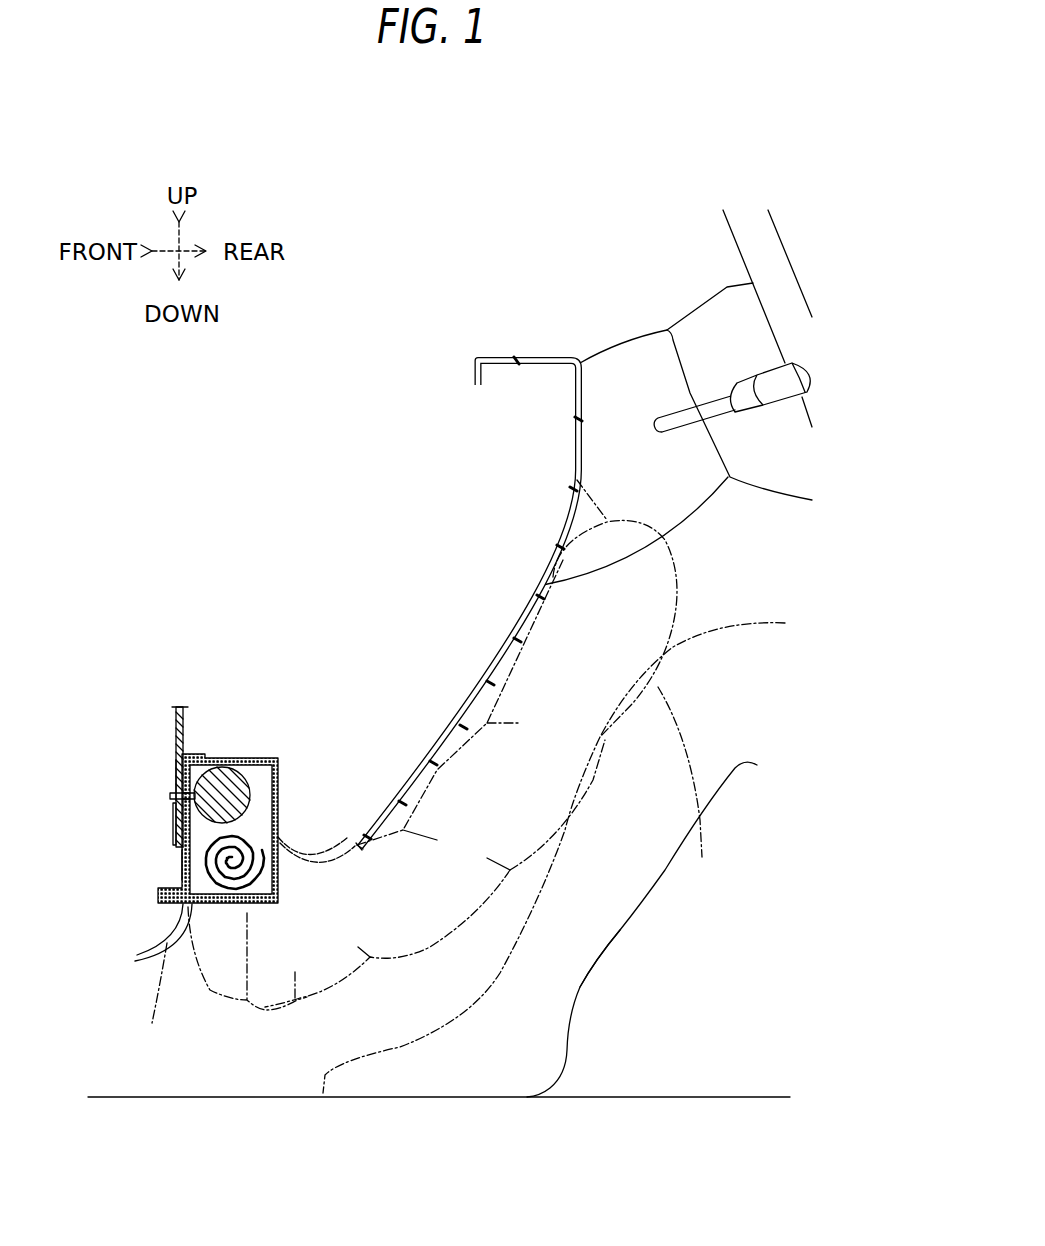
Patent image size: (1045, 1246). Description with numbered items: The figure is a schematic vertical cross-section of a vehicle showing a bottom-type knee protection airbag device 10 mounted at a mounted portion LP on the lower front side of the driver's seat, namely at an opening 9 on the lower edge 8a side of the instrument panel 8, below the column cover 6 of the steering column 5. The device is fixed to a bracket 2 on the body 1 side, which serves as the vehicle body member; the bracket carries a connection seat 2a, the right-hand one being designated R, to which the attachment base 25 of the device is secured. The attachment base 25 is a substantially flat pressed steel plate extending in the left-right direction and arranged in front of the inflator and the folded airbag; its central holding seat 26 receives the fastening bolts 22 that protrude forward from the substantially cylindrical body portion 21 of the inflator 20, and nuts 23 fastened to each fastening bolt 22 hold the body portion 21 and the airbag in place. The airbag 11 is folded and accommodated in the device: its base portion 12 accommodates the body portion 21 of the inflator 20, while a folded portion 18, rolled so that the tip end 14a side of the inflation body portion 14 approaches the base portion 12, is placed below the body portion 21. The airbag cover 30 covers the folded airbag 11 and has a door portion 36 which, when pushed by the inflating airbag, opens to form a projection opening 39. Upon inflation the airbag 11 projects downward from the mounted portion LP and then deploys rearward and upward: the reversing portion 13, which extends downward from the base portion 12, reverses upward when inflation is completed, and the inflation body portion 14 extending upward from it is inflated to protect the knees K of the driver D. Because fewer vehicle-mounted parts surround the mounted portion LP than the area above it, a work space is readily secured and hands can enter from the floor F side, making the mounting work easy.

The body 1 is at (176, 760).
The bracket 2 is at (150, 726).
The connection seat 2a is at (127, 739).
The steering column 5 is at (627, 323).
The column cover 6 is at (610, 367).
The instrument panel 8 is at (537, 603).
The lower edge 8a is at (360, 822).
The opening 9 is at (317, 838).
The knee protection airbag device 10 is at (258, 743).
The airbag 11 is at (690, 574).
The base portion 12 is at (255, 782).
The reversing portion 13 is at (370, 987).
The inflation body portion 14 is at (547, 808).
The tip end 14a is at (577, 480).
The folded portion 18 is at (252, 907).
The inflator 20 is at (210, 739).
The body portion 21 is at (222, 795).
The fastening bolt 22 is at (172, 796).
The nut 23 is at (177, 807).
The attachment base 25 is at (182, 863).
The holding seat 26 is at (173, 830).
The airbag cover 30 is at (255, 758).
The door portion 36 is at (208, 905).
The projection opening 39 is at (227, 927).
The knees K is at (702, 877).
The driver D is at (750, 780).
The floor F is at (158, 1097).
The mounted portion LP is at (307, 957).
The right side R is at (177, 765).